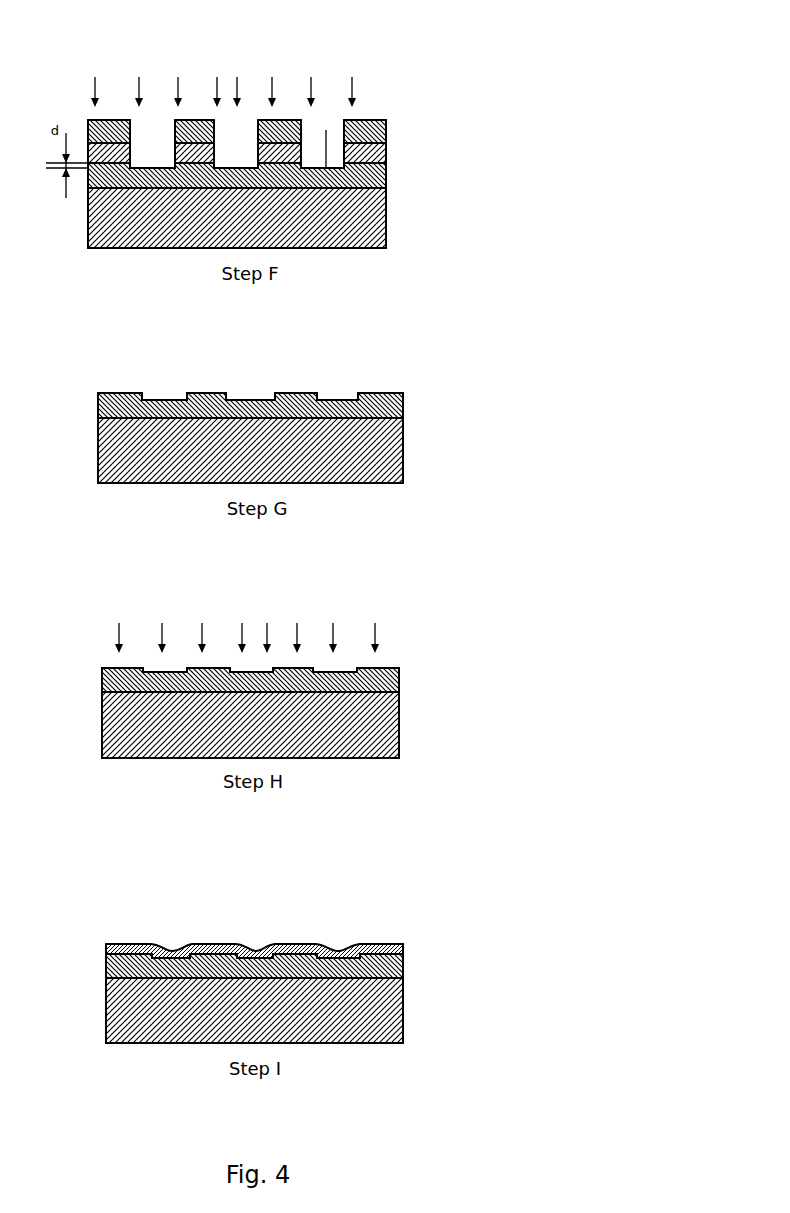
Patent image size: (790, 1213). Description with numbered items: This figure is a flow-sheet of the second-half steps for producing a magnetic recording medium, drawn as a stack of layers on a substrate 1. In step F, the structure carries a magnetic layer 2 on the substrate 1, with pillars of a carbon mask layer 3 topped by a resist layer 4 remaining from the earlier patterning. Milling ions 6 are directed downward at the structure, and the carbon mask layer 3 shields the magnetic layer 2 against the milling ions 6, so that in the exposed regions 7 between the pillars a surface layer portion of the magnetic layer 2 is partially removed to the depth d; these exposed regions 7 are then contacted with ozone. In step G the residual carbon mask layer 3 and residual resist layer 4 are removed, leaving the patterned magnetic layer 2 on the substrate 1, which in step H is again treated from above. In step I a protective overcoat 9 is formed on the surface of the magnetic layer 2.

The substrate 1 is at (388, 217).
The magnetic layer 2 is at (388, 176).
The carbon mask layer 3 is at (388, 153).
The resist layer 4 is at (388, 128).
The milling ion 6 is at (353, 83).
The region from which surface layer portion of the magnetic layer has been partially 7 is at (326, 131).
The protective overcoat 9 is at (403, 945).